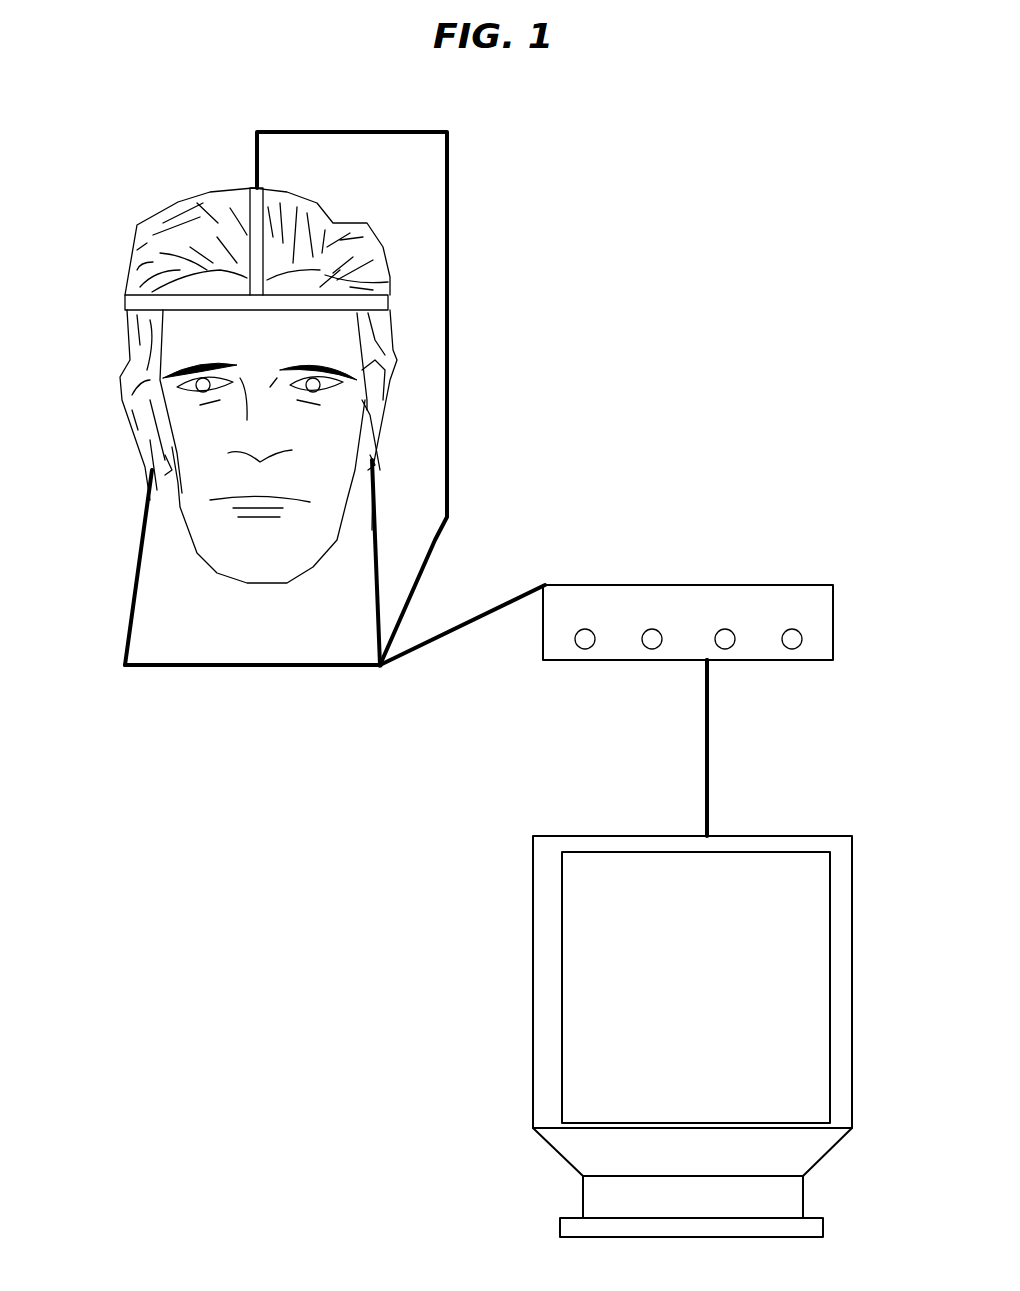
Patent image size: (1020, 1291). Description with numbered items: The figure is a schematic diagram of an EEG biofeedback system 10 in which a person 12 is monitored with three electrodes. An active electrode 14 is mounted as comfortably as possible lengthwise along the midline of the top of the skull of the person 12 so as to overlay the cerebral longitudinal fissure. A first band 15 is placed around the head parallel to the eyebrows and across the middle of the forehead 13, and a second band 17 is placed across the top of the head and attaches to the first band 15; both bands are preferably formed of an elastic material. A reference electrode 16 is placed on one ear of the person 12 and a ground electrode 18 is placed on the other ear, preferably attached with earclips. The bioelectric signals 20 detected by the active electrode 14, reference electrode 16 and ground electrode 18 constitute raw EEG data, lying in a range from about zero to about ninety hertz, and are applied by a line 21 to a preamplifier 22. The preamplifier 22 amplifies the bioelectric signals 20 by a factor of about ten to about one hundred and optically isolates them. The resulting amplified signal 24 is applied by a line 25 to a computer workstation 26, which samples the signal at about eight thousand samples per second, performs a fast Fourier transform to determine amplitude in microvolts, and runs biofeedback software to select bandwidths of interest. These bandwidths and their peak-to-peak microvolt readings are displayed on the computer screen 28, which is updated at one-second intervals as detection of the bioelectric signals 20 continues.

The EEG biofeedback system 10 is at (273, 744).
The person 12 is at (333, 223).
The forehead 13 is at (320, 287).
The active electrode 14 is at (327, 130).
The first band 15 is at (130, 302).
The reference electrode 16 is at (135, 420).
The second band 17 is at (253, 187).
The ground electrode 18 is at (387, 413).
The bioelectric signals 20 is at (380, 665).
The line 21 is at (472, 618).
The preamplifier 22 is at (713, 585).
The amplified signal 24 is at (705, 662).
The line 25 is at (709, 738).
The computer workstation 26 is at (622, 836).
The computer screen 28 is at (820, 917).